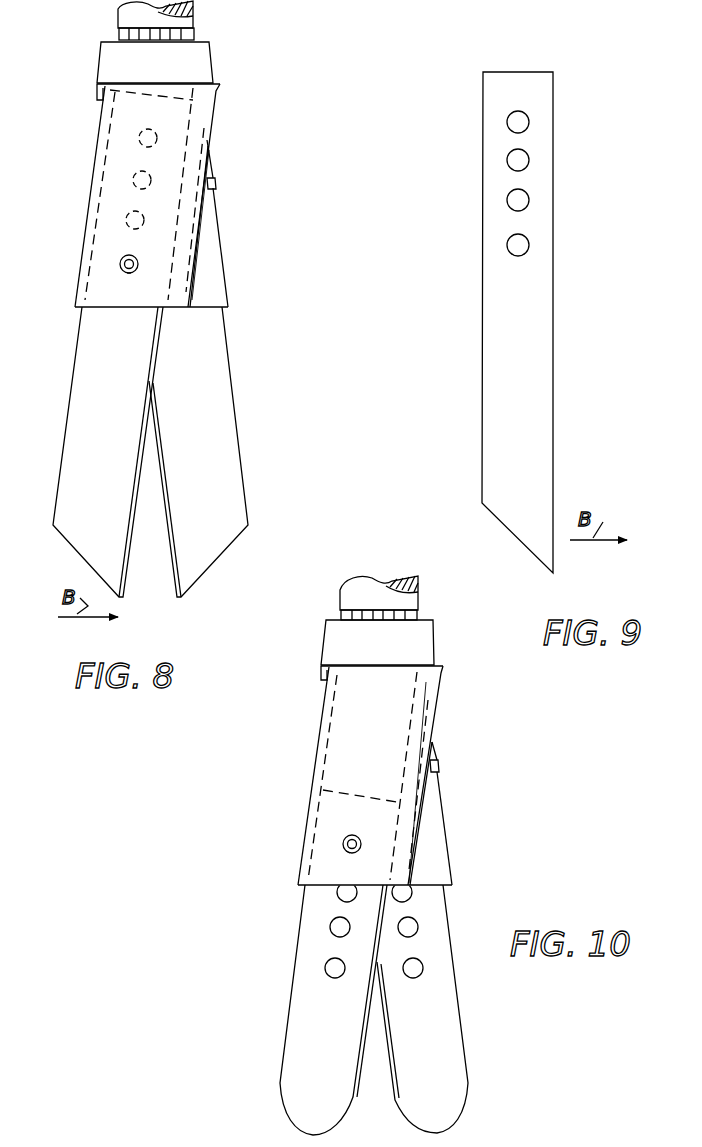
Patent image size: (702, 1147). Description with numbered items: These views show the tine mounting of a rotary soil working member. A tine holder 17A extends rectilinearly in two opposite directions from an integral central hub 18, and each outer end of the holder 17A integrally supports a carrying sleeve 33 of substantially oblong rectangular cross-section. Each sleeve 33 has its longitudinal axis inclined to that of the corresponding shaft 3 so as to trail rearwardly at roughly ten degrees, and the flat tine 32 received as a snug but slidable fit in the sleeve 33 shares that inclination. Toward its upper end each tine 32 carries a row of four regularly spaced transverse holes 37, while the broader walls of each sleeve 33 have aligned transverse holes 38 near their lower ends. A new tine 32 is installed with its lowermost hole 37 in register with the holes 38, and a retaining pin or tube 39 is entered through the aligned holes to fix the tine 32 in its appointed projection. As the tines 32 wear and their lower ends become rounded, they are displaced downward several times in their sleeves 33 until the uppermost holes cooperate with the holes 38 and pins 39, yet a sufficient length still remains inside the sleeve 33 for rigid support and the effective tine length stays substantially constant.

In FIG. 8, the shaft 3 is at (196, 8).
In FIG. 10, the shaft 3 is at (403, 573).
In FIG. 8, the tine holder 17A is at (233, 96).
In FIG. 10, the tine holder 17A is at (450, 699).
In FIG. 8, the hub 18 is at (103, 58).
In FIG. 10, the hub 18 is at (338, 635).
In FIG. 8, the tine 32 is at (85, 398).
In FIG. 9, the tine 32 is at (500, 315).
In FIG. 10, the tine 32 is at (293, 1013).
In FIG. 8, the carrying sleeve 33 is at (110, 157).
In FIG. 10, the carrying sleeve 33 is at (325, 742).
In FIG. 8, the holes 37 is at (147, 177).
In FIG. 9, the holes 37 is at (508, 122).
In FIG. 10, the holes 37 is at (338, 891).
In FIG. 8, the transverse holes 38 is at (120, 264).
In FIG. 10, the transverse holes 38 is at (342, 843).
In FIG. 8, the retaining pin or tube 39 is at (129, 274).
In FIG. 10, the retaining pin or tube 39 is at (341, 851).